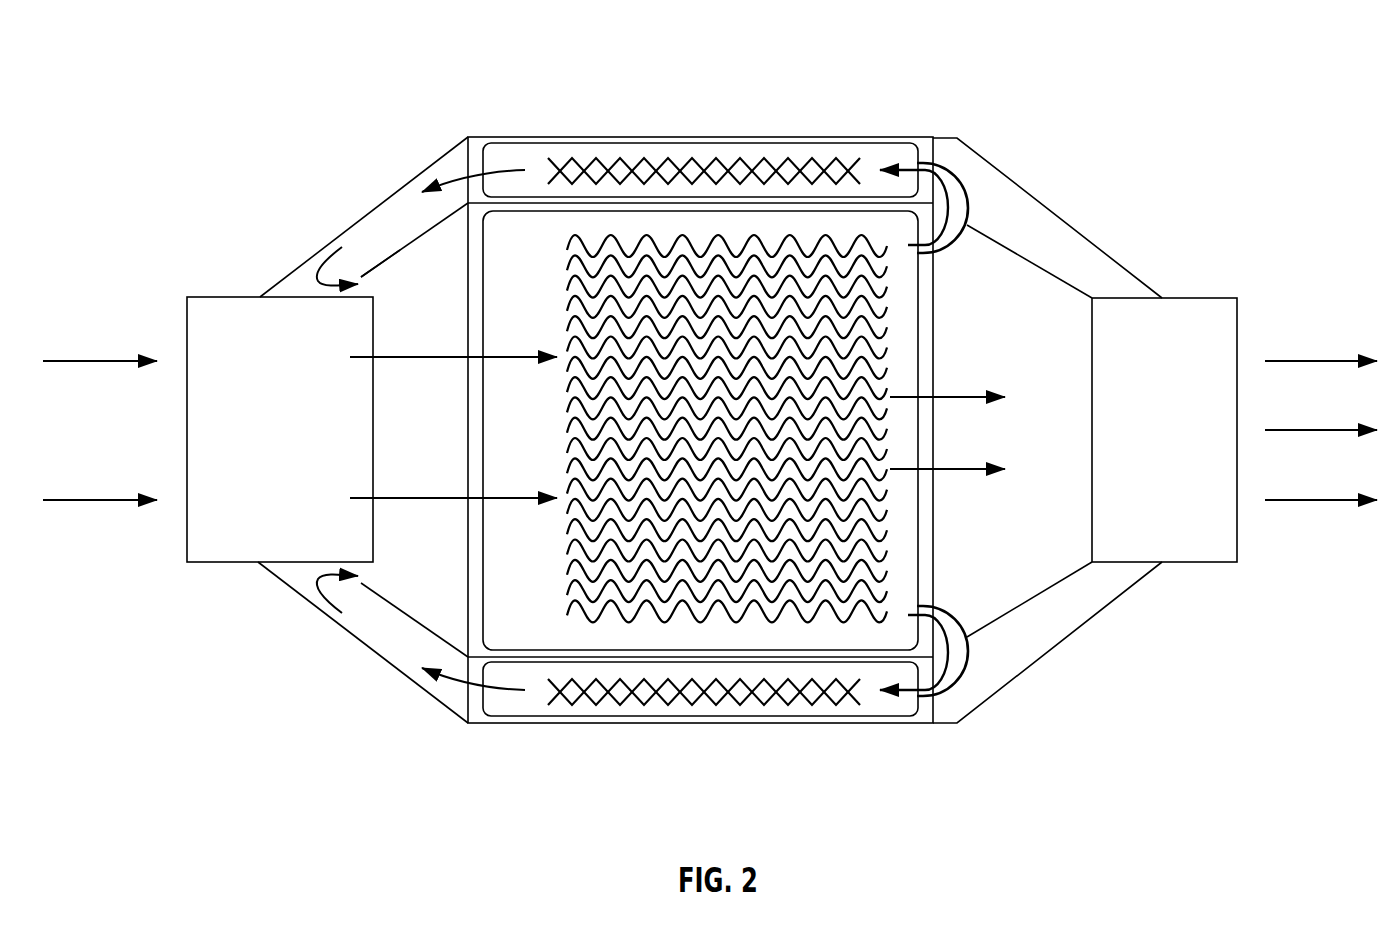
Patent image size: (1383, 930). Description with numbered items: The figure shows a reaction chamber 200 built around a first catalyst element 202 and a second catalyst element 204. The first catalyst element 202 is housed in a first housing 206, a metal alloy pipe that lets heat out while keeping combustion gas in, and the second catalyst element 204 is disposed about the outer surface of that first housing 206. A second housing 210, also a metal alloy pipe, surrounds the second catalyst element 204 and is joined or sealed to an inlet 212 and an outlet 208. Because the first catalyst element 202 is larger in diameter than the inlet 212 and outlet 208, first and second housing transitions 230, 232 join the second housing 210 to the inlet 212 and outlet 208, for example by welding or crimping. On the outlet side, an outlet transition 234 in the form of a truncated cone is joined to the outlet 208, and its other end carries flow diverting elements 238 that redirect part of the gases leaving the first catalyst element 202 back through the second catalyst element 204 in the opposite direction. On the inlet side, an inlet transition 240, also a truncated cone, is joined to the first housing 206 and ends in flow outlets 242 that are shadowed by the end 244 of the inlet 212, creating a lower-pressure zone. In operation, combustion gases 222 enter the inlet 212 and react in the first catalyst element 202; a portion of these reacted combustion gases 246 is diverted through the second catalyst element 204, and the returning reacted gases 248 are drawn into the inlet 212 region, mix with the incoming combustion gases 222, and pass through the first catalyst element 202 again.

The reaction chamber 200 is at (1251, 70).
The first catalyst element 202 is at (843, 320).
The second catalyst element 204 is at (815, 168).
The first housing 206 is at (530, 660).
The outlet 208 is at (1222, 298).
The second housing 210 is at (705, 137).
The inlet 212 is at (233, 525).
The combustion gases 222 is at (97, 358).
The first housing transition 230 is at (275, 283).
The second housing transition 232 is at (1137, 275).
The outlet transition 234 is at (1038, 262).
The flow diverting element 238 is at (945, 165).
The inlet transition 240 is at (418, 235).
The flow outlet 242 is at (340, 248).
The end of the inlet 244 is at (374, 313).
The reacted combustion gases 246 is at (921, 165).
The reacted gases 248 is at (320, 268).